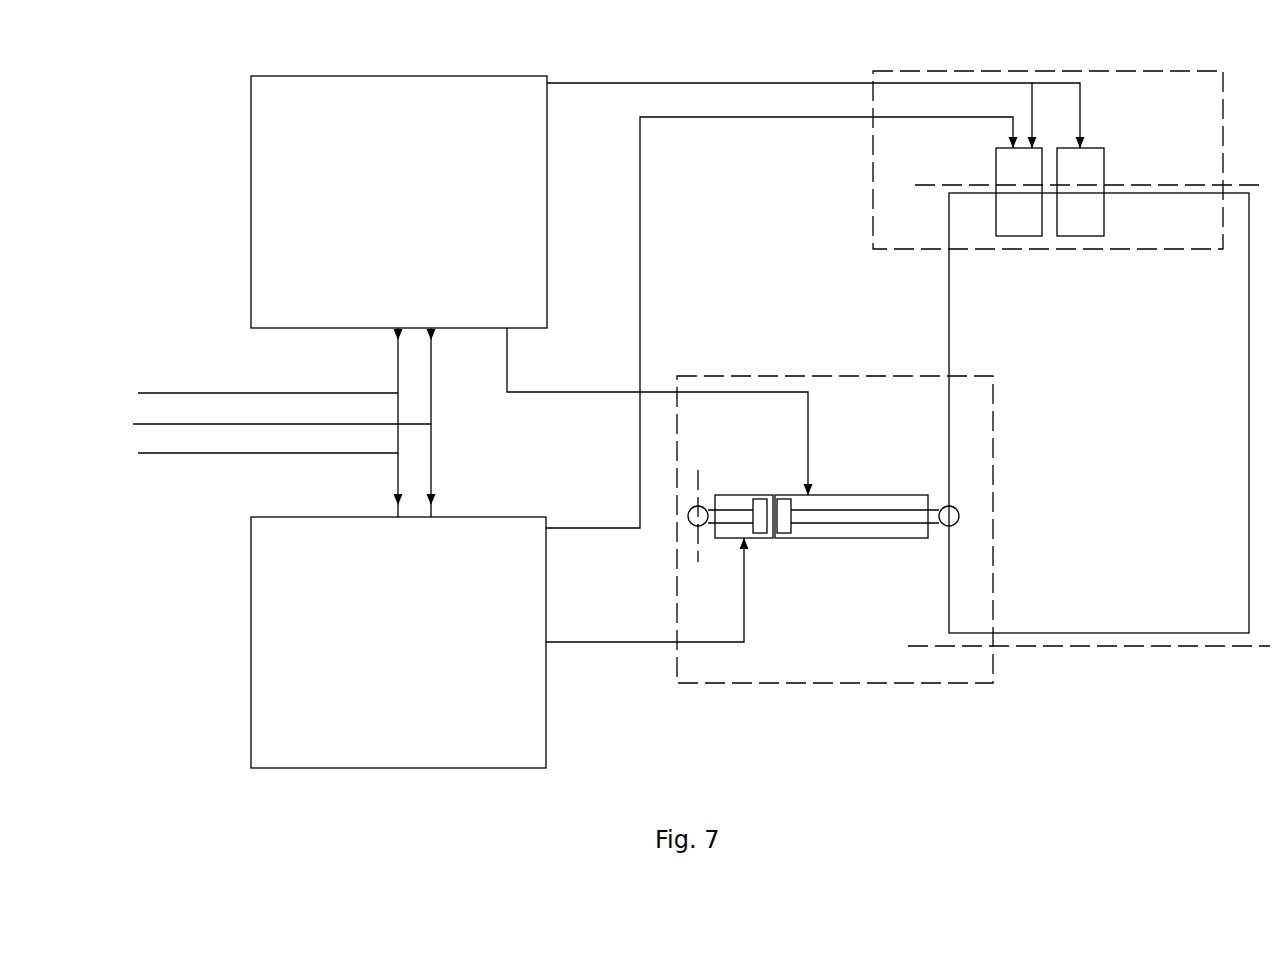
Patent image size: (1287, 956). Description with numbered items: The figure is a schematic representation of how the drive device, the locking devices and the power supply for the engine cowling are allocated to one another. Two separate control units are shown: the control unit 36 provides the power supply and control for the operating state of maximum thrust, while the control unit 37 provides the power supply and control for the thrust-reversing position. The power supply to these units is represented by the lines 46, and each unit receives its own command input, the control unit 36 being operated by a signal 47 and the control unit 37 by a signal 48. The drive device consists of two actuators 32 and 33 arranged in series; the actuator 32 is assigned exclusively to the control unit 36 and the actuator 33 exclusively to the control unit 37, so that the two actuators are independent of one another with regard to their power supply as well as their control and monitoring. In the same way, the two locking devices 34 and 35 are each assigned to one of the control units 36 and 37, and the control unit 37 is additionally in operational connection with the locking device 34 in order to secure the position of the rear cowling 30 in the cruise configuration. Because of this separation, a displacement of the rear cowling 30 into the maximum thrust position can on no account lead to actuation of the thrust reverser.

The rear cowling 30 is at (1249, 480).
The actuator 32 is at (727, 495).
The actuator 33 is at (880, 495).
The locking device 34 is at (996, 222).
The locking device 35 is at (1104, 222).
The control unit 36 is at (546, 716).
The control unit 37 is at (251, 185).
The lines 46 is at (141, 424).
The signal 47 is at (172, 453).
The signal 48 is at (168, 393).